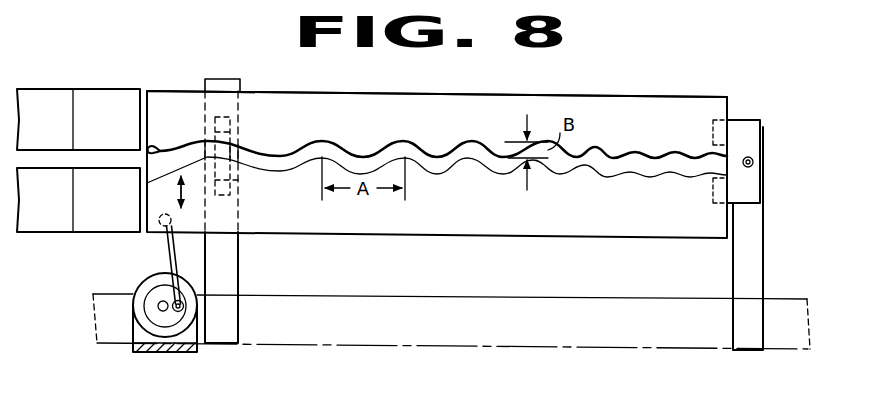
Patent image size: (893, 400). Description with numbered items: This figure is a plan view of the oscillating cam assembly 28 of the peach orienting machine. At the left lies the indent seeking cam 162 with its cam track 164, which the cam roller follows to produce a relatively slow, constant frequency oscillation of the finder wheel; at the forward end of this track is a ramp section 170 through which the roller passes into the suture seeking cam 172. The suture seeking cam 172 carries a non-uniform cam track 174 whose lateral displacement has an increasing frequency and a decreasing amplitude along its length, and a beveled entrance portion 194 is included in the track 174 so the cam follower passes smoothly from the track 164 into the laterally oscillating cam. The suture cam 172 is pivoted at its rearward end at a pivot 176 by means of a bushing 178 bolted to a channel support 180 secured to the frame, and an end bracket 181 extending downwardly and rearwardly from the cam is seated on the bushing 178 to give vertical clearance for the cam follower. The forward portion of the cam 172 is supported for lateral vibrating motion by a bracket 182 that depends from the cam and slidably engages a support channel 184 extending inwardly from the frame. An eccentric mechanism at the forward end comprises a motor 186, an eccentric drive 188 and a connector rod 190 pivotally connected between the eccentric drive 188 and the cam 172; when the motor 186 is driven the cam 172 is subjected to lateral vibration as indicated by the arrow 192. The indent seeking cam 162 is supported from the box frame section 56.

The oscillating cam assembly 28 is at (629, 76).
The box frame section 56 is at (488, 297).
The indent seeking cam 162 is at (40, 90).
The cam track 164 is at (22, 168).
The ramp section 170 is at (105, 90).
The suture seeking cam 172 is at (355, 102).
The cam track 174 is at (290, 155).
The pivot 176 is at (756, 162).
The bushing 178 is at (752, 158).
The channel support 180 is at (752, 238).
The end bracket 181 is at (753, 192).
The bracket 182 is at (245, 181).
The support channel 184 is at (233, 275).
The motor 186 is at (150, 278).
The eccentric drive 188 is at (153, 318).
The connector rod 190 is at (166, 244).
The lateral vibration arrow 192 is at (181, 192).
The beveled entrance portion 194 is at (160, 150).